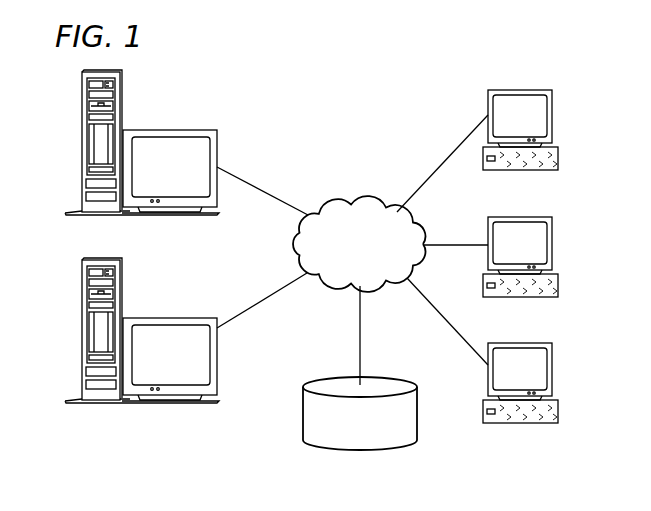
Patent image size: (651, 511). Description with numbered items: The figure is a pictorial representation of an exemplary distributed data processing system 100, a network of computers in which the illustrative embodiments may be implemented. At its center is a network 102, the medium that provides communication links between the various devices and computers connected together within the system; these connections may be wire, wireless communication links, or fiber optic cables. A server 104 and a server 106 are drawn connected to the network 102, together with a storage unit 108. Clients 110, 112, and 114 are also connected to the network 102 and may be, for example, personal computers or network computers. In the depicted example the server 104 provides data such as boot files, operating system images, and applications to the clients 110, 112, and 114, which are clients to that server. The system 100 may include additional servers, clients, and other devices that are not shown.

The distributed data processing system 100 is at (407, 97).
The network 102 is at (334, 199).
The server 104 is at (82, 146).
The server 106 is at (82, 328).
The storage unit 108 is at (341, 450).
The client 110 is at (554, 113).
The client 112 is at (554, 245).
The client 114 is at (554, 370).